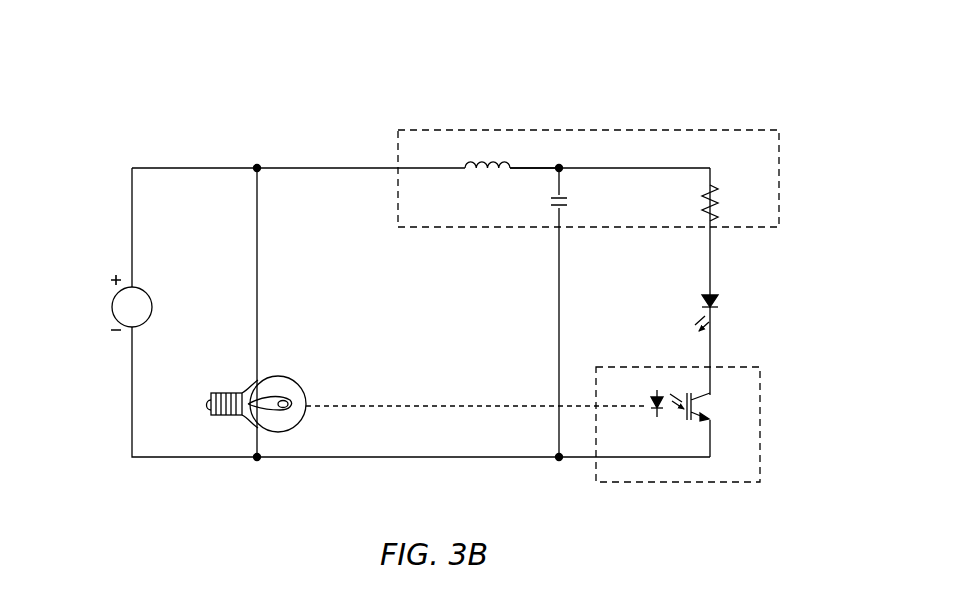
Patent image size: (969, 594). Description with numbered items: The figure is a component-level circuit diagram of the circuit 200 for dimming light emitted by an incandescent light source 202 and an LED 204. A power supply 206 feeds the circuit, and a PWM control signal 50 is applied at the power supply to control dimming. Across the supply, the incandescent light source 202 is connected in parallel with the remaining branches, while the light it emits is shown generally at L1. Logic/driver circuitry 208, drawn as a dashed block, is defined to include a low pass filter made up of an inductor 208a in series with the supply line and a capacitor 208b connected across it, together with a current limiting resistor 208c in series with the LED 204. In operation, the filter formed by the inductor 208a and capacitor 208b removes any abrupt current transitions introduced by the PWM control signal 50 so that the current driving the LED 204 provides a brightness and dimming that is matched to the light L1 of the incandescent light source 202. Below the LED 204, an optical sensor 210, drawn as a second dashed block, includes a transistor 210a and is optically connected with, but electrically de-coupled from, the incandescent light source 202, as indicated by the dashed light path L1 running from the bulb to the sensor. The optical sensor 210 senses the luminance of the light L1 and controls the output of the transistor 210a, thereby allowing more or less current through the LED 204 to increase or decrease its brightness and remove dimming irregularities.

The circuit 200 is at (178, 95).
The power supply 206 is at (119, 268).
The PWM control signal 50 is at (108, 307).
The incandescent light source 202 is at (226, 378).
The light emitted from the incandescent light source L1 is at (435, 403).
The logic/driver circuitry 208 is at (751, 125).
The inductor 208a is at (475, 185).
The capacitor 208b is at (580, 204).
The current limiting resistor 208c is at (729, 203).
The LED 204 is at (729, 303).
The optical sensor 210 is at (612, 488).
The transistor 210a is at (669, 428).